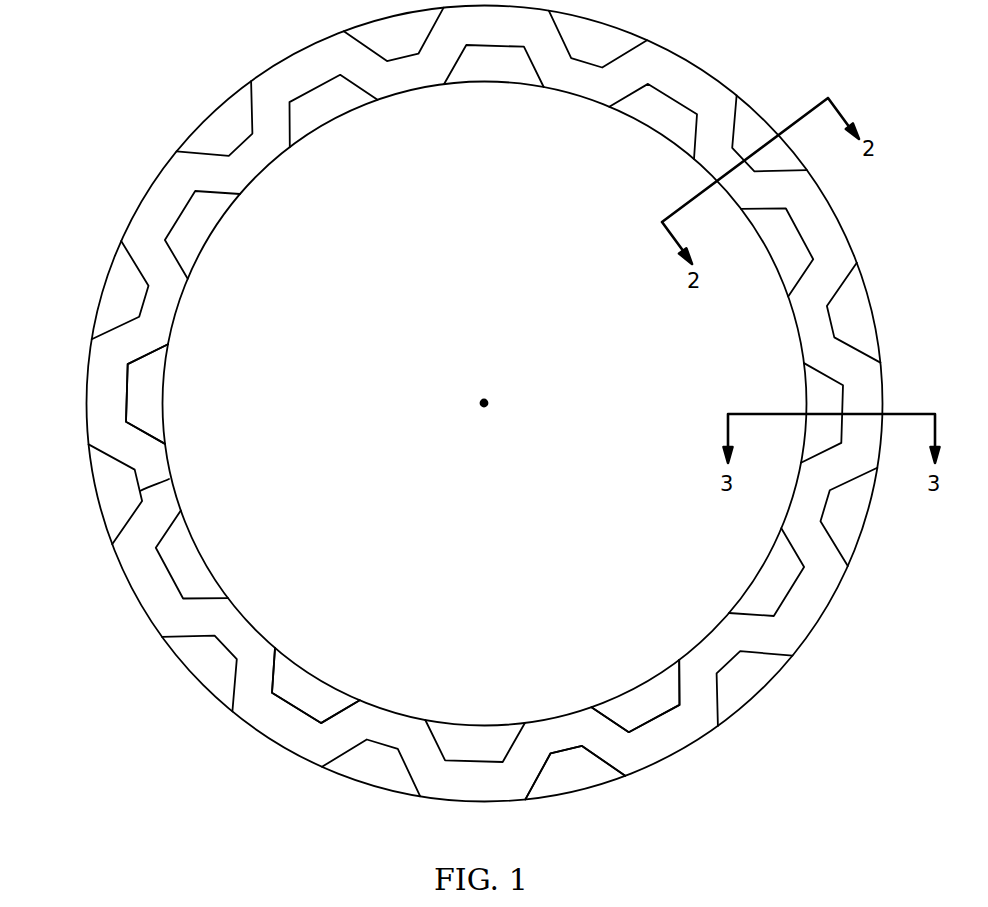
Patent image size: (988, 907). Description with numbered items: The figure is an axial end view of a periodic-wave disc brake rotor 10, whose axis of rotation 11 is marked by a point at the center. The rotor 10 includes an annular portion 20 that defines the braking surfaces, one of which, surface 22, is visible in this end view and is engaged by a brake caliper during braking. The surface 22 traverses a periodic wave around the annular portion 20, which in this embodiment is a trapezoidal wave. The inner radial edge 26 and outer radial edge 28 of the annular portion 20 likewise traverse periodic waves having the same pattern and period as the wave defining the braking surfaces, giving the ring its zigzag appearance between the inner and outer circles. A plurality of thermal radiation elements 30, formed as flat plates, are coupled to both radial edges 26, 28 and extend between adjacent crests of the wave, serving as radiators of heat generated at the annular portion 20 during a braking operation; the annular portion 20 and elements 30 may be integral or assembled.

The disc brake rotor 10 is at (114, 111).
The axis of rotation 11 is at (491, 381).
The annular portion 20 is at (188, 302).
The surface 22 is at (107, 393).
The inner radial edge 26 is at (293, 707).
The outer radial edge 28 is at (168, 485).
The thermal radiation elements 30 is at (103, 468).